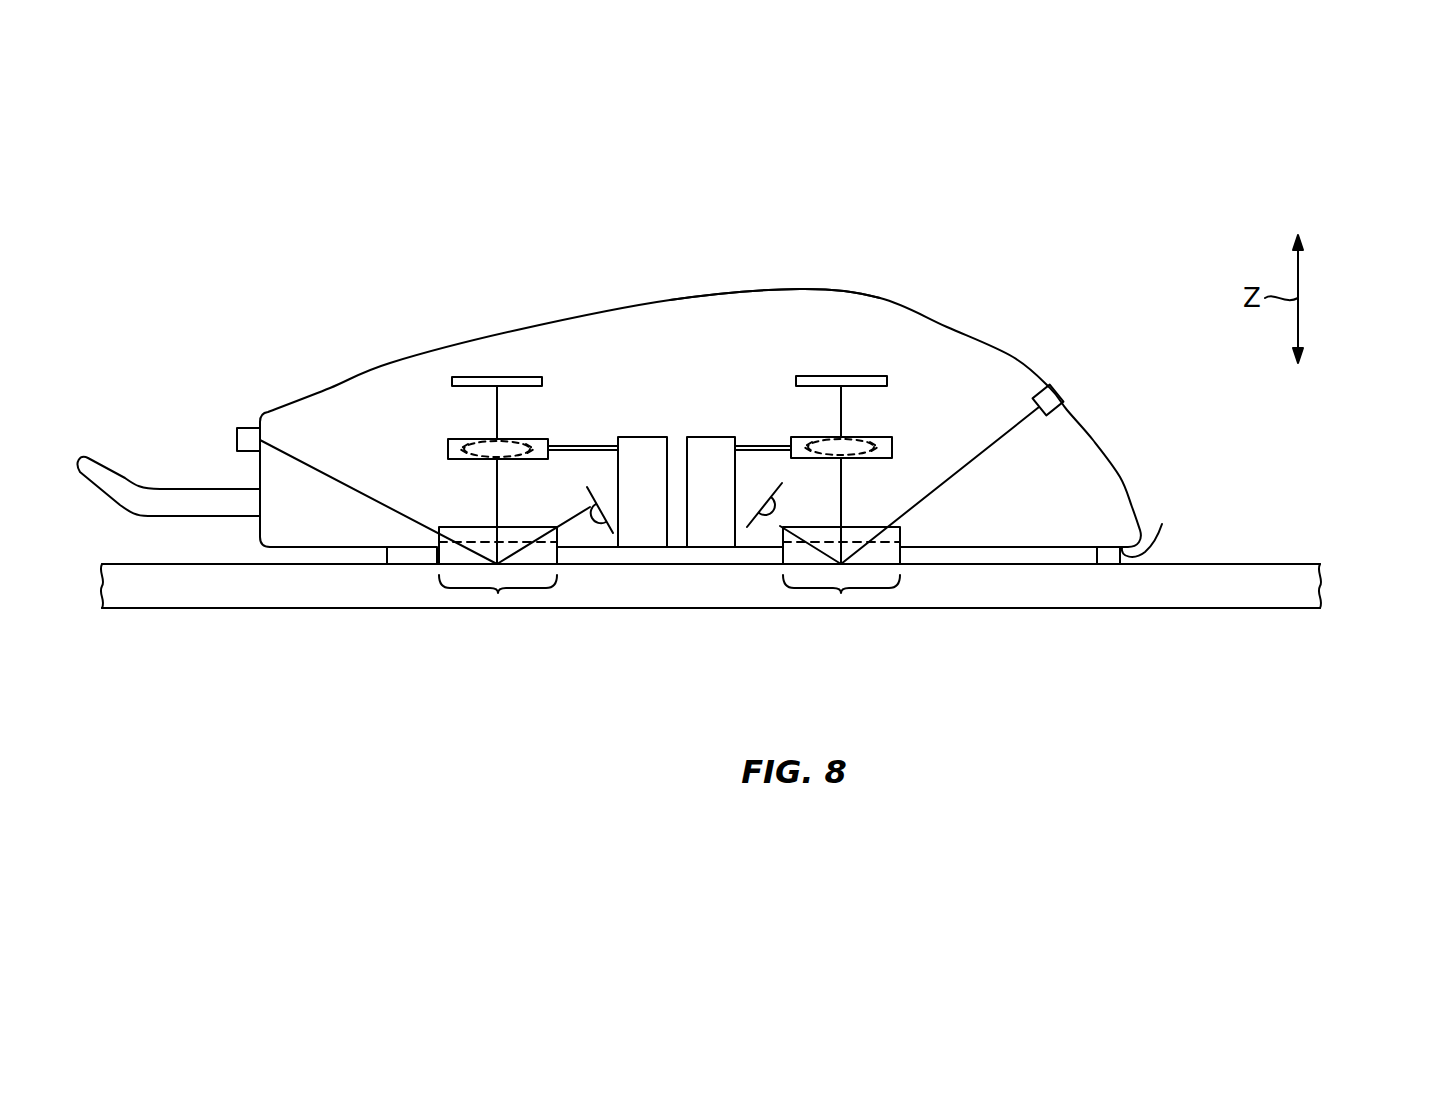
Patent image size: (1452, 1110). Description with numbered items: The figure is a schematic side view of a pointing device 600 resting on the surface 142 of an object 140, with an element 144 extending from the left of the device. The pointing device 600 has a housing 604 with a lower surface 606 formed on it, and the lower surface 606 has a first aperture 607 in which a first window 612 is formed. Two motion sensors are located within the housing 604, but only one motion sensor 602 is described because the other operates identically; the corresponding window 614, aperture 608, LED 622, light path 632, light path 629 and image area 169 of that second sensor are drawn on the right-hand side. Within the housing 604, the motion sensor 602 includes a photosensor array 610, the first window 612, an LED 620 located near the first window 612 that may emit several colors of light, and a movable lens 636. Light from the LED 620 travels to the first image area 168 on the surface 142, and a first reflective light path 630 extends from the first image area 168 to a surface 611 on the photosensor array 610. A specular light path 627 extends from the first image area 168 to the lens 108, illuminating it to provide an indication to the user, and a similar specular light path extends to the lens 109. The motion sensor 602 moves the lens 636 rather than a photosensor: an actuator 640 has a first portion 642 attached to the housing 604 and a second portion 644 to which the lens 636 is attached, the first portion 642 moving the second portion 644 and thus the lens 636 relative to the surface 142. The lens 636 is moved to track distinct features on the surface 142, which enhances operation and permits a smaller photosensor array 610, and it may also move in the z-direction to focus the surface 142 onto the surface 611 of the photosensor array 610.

The pointing device 600 is at (1048, 242).
The motion sensor 602 is at (418, 388).
The housing 604 is at (820, 284).
The lower surface 606 is at (1162, 524).
The lens 108 is at (237, 438).
The lens 109 is at (1055, 395).
The object 140 is at (1348, 578).
The surface 142 is at (1283, 564).
The cable 144 is at (130, 483).
The specular light path 627 is at (323, 471).
The second mirror 629 is at (983, 458).
The first window 612 is at (527, 527).
The second prism 614 is at (867, 527).
The first aperture 607 is at (484, 549).
The second reflecting surface 608 is at (830, 549).
The photosensor array 610 is at (520, 376).
The surface 611 is at (535, 386).
The first reflective light path 630 is at (500, 408).
The second optical axis 632 is at (841, 408).
The lens 636 is at (480, 440).
The second portion 644 is at (448, 447).
The actuator 640 is at (637, 415).
The first portion 642 is at (662, 437).
The LED 620 is at (594, 520).
The second detector 622 is at (770, 518).
The first image area 168 is at (498, 593).
The second sensing region 169 is at (841, 593).